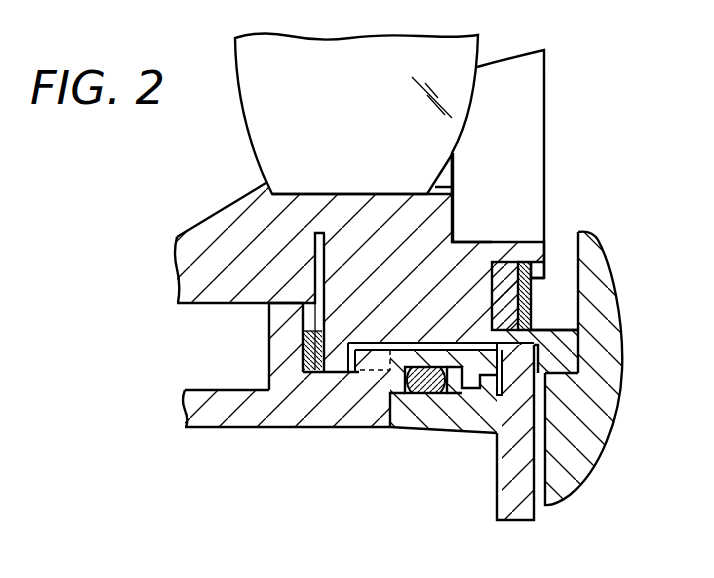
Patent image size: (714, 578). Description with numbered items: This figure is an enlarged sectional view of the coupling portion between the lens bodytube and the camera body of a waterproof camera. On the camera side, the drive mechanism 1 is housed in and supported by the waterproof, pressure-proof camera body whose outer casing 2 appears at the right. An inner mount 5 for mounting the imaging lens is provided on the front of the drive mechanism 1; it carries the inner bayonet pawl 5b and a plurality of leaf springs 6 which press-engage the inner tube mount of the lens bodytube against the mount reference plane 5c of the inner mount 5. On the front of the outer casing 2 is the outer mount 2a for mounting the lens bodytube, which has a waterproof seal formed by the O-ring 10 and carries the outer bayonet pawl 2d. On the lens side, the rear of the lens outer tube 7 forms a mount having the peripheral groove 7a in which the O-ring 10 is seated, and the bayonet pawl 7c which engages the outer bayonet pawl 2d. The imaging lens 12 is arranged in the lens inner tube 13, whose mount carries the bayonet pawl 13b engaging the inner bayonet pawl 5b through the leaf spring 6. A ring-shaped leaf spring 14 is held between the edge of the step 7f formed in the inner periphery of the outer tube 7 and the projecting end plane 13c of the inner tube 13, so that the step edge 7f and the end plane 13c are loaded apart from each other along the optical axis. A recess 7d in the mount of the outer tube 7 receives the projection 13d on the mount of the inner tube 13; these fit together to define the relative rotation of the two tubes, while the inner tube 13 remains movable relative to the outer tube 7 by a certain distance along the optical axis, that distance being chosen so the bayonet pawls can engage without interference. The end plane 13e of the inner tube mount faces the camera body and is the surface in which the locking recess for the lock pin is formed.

The drive mechanism 1 is at (606, 353).
The outer casing 2 is at (520, 503).
The outer mount 2a is at (418, 396).
The outer bayonet pawl 2d is at (471, 390).
The inner mount 5 is at (568, 343).
The inner bayonet pawl 5b is at (505, 272).
The mount reference plane 5c is at (492, 282).
The leaf spring 6 is at (538, 294).
The lens outer tube 7 is at (206, 410).
The peripheral groove 7a is at (428, 402).
The bayonet pawl 7c is at (488, 370).
The recess 7d is at (378, 373).
The edge of step 7f is at (298, 395).
The O-ring 10 is at (438, 396).
The imaging lens 12 is at (282, 151).
The lens inner tube 13 is at (221, 236).
The bayonet pawl 13b is at (533, 262).
The projecting end plane 13c is at (322, 356).
The projection 13d is at (358, 374).
The end plane 13e is at (525, 305).
The ring-shaped leaf spring 14 is at (302, 357).